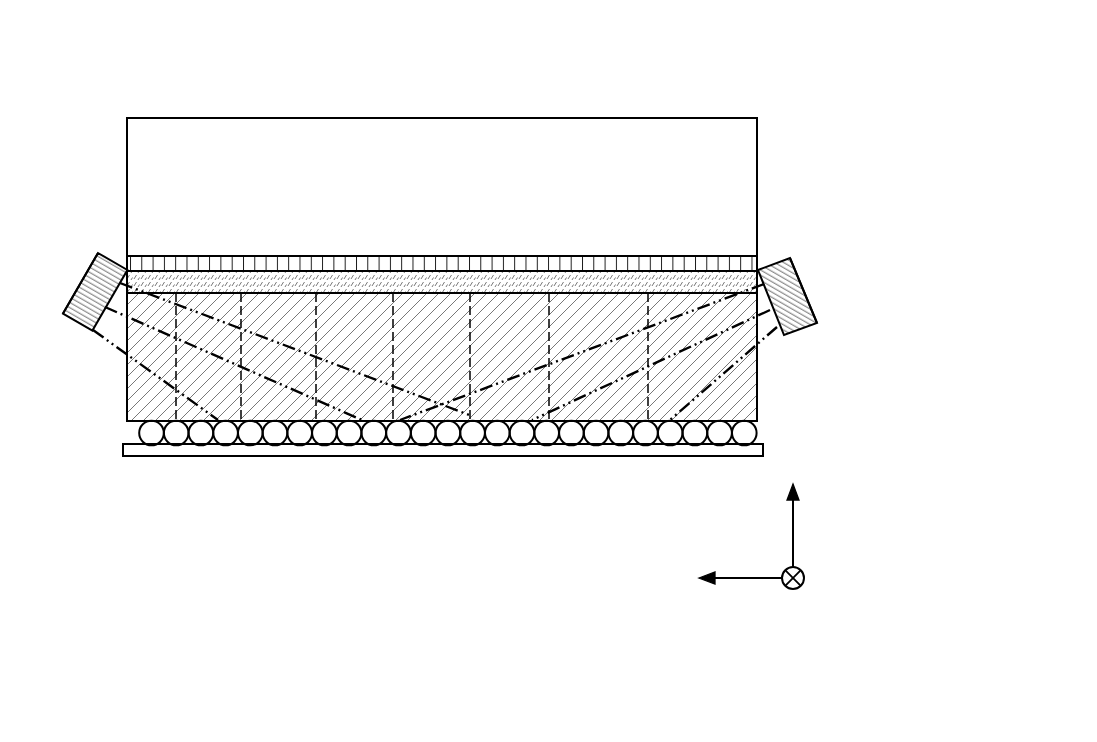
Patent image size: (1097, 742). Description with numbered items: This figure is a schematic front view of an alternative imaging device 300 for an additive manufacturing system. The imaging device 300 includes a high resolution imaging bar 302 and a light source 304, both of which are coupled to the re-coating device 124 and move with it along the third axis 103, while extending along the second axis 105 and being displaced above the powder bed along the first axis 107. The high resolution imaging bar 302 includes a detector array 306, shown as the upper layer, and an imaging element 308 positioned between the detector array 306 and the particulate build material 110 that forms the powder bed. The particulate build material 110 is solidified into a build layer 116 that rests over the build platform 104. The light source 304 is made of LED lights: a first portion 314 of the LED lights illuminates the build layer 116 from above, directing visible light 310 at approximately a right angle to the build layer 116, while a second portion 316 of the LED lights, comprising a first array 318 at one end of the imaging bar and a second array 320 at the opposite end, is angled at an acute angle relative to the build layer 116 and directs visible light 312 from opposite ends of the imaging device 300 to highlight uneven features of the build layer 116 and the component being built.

The imaging device 300 is at (202, 93).
The high resolution imaging bar 302 is at (98, 175).
The light source 304 is at (467, 273).
The detector array 306 is at (710, 188).
The imaging element 308 is at (744, 264).
The re-coating device 124 is at (727, 388).
The visible light 312 is at (740, 393).
The first portion of the LED lights 314 is at (163, 283).
The second portion of the LED lights 316 is at (78, 254).
The first array 318 is at (72, 318).
The second array 320 is at (814, 322).
The visible light 310 is at (408, 423).
The particulate build material 110 is at (146, 433).
The build layer 116 is at (472, 434).
The build platform 104 is at (124, 448).
The second axis 105 is at (745, 572).
The first axis 107 is at (797, 532).
The third axis 103 is at (807, 578).